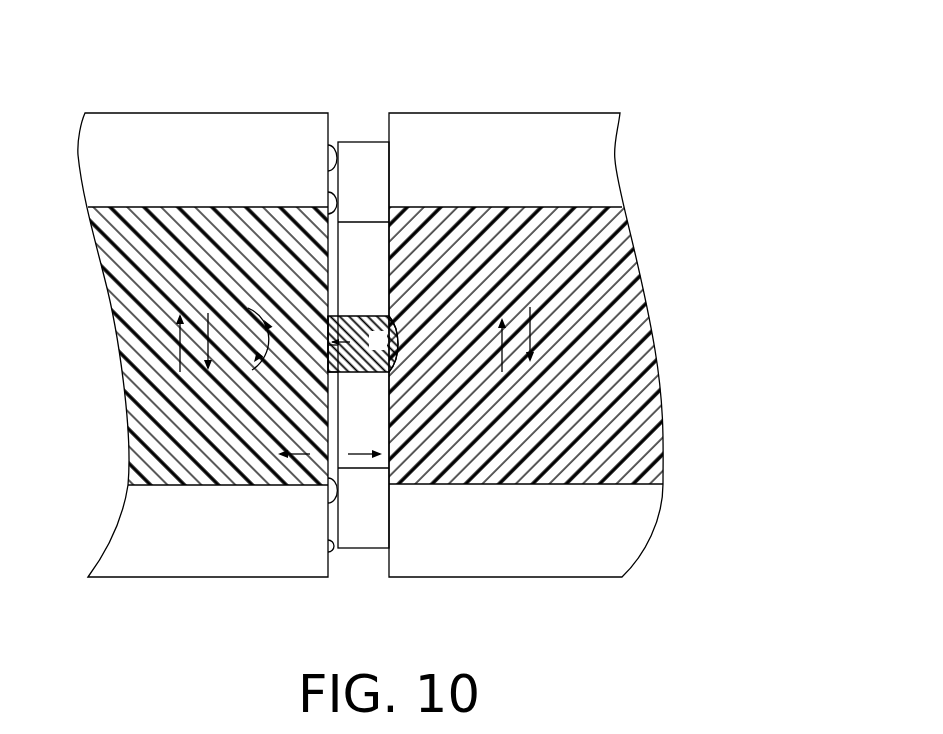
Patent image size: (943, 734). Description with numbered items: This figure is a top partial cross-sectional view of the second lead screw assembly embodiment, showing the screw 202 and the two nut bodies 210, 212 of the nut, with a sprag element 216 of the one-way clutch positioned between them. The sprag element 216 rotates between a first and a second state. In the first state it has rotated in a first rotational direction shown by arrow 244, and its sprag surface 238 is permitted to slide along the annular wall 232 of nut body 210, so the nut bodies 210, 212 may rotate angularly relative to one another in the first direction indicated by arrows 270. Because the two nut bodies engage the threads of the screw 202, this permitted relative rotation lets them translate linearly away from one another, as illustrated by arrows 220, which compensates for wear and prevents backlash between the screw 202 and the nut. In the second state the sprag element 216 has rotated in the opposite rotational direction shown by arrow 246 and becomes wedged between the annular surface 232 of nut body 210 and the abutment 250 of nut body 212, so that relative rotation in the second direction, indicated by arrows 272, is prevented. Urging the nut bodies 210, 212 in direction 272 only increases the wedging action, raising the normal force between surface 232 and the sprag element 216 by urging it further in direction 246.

The nut body 210 is at (224, 77).
The nut body 212 is at (480, 90).
The screw 202 is at (360, 462).
The sprag element 216 is at (360, 316).
The arrows 220 is at (297, 458).
The annular wall 232 is at (327, 490).
The sprag surface 238 is at (336, 370).
The arrow 244 is at (332, 352).
The arrow 246 is at (262, 322).
The abutment 250 is at (397, 318).
The arrows 270 is at (178, 352).
The arrows 272 is at (250, 357).